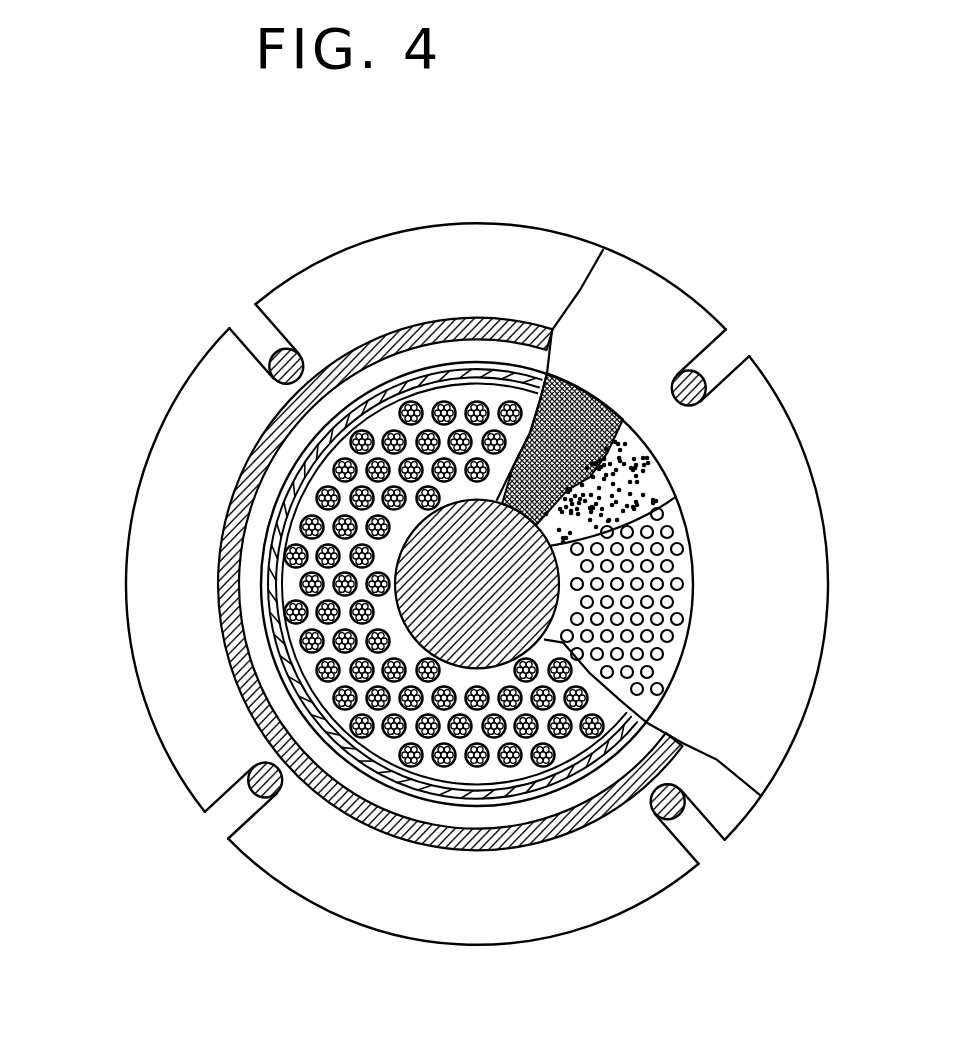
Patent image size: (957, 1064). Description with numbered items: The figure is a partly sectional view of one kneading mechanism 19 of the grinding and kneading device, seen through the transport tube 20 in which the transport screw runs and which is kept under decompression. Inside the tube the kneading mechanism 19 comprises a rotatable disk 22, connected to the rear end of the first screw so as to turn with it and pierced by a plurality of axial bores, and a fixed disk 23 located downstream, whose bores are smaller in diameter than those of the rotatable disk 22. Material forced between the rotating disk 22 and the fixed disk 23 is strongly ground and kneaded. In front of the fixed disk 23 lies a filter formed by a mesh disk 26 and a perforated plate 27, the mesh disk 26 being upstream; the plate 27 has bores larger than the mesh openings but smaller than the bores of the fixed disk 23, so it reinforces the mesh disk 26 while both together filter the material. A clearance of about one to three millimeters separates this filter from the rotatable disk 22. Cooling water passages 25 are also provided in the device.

The kneading mechanism 19 is at (712, 558).
The transport tube 20 is at (281, 670).
The rotatable disk 22 is at (465, 393).
The fixed disk 23 is at (683, 634).
The cooling water passages 25 is at (253, 598).
The mesh disk 26 is at (600, 398).
The perforated plate 27 is at (647, 487).